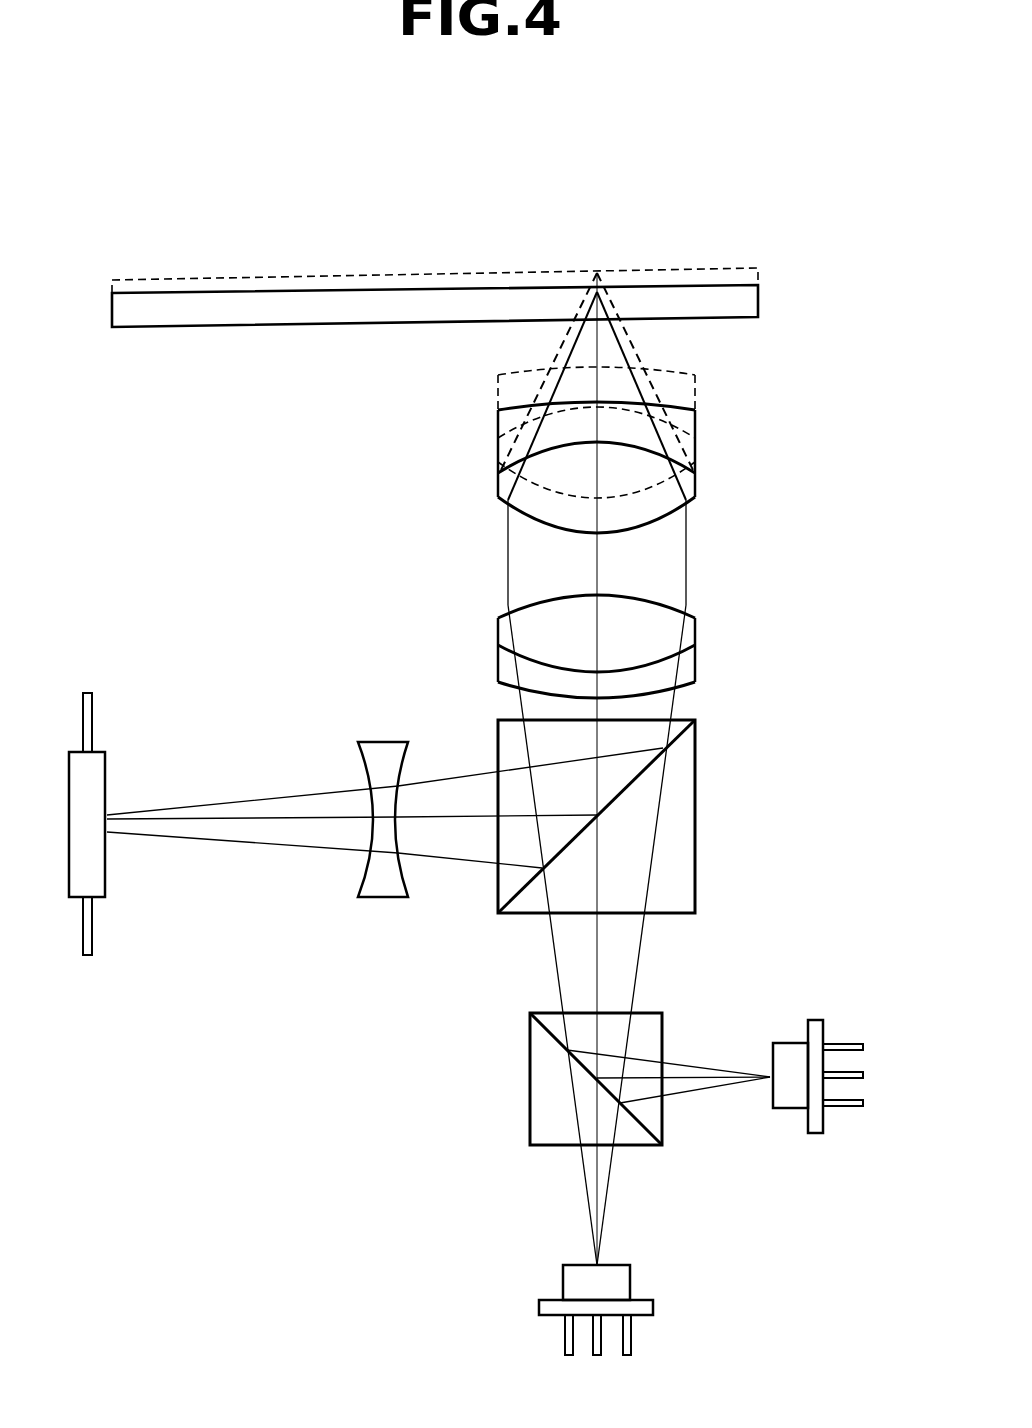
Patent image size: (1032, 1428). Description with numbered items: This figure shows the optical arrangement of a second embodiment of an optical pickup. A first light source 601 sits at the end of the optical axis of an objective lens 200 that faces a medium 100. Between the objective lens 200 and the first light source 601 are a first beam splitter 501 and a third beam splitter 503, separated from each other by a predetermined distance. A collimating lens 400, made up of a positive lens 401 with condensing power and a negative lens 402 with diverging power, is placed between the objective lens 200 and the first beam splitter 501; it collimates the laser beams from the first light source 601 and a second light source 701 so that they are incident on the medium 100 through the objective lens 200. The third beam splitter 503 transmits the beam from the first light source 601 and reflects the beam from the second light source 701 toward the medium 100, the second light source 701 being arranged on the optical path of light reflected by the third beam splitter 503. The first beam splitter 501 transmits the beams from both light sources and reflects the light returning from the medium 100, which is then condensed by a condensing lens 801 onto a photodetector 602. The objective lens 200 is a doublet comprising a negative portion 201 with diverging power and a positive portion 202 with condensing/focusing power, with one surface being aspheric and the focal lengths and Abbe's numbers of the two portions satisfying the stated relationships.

The medium 100 is at (283, 350).
The objective lens 200 is at (719, 450).
The negative portion 201 is at (695, 420).
The positive portion 202 is at (695, 480).
The collimating lens 400 is at (719, 646).
The positive lens 401 is at (695, 625).
The negative lens 402 is at (695, 668).
The first beam splitter 501 is at (686, 878).
The third beam splitter 503 is at (537, 1125).
The first light source 601 is at (645, 1307).
The photodetector 602 is at (97, 882).
The second light source 701 is at (815, 1123).
The condensing lens 801 is at (380, 888).